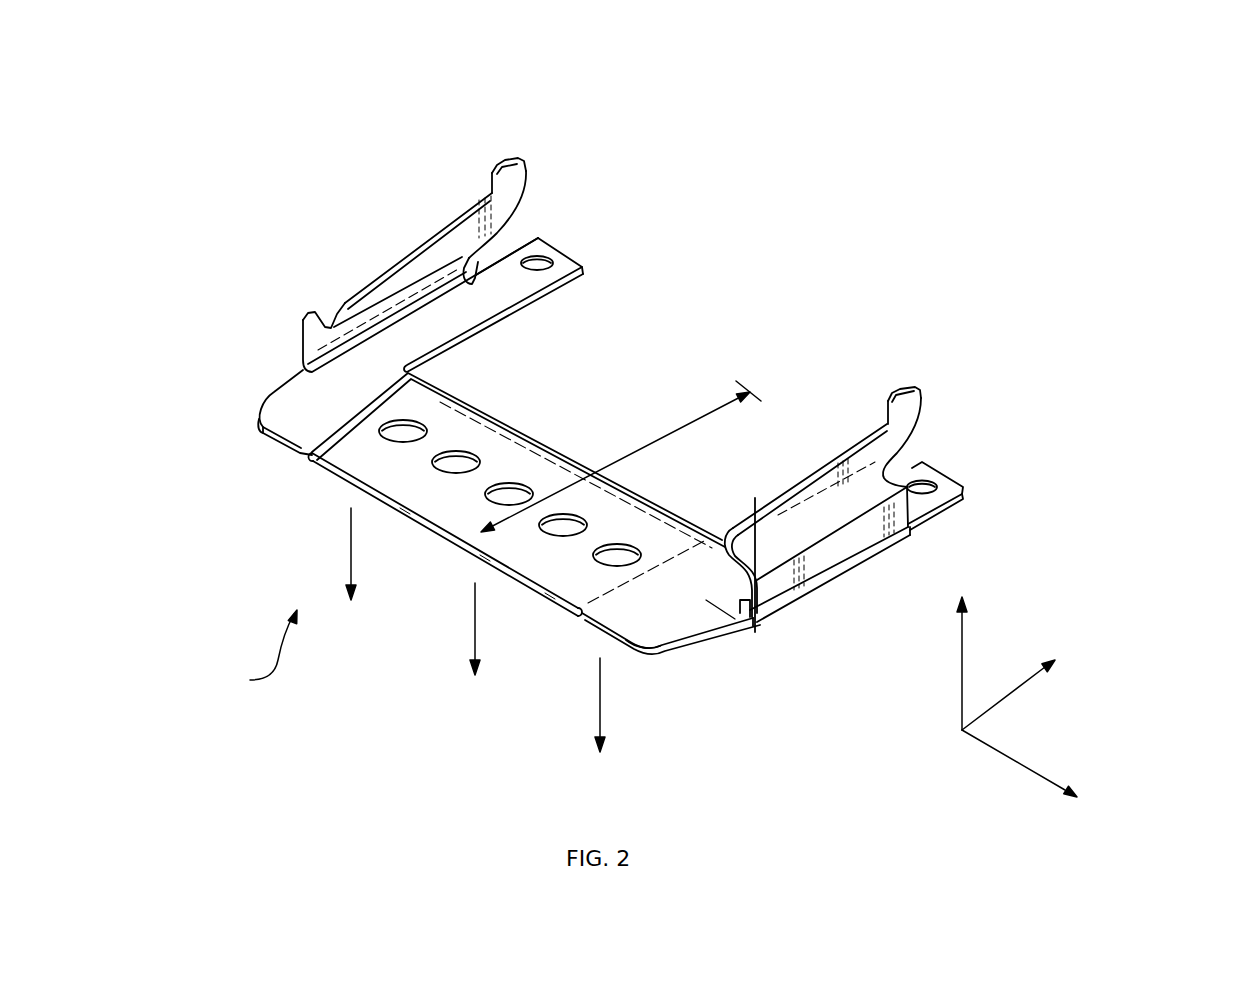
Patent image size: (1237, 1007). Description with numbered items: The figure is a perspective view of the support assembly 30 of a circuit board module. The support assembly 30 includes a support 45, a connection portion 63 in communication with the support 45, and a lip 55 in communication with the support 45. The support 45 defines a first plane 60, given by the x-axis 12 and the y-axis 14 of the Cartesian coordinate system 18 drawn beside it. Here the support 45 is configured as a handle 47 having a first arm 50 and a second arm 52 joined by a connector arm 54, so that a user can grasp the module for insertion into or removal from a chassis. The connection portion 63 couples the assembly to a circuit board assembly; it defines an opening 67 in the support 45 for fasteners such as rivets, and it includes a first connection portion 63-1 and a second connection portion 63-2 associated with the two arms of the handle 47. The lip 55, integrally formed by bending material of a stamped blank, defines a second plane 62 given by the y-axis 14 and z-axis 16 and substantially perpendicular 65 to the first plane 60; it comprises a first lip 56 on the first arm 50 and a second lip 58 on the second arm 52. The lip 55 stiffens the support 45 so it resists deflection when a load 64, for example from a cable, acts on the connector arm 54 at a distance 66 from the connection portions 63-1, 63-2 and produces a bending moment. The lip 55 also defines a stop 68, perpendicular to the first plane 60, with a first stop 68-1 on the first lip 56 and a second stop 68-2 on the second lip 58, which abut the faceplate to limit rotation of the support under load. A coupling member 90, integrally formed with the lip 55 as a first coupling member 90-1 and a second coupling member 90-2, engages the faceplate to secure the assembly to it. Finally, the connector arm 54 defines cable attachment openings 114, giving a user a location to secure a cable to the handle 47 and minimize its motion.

The x-axis 12 is at (1010, 762).
The y-axis 14 is at (1007, 697).
The z-axis 16 is at (963, 652).
The Cartesian coordinate system 18 is at (1120, 597).
The support assembly 30 is at (916, 288).
The support 45 is at (518, 420).
The handle 47 is at (258, 652).
The first arm 50 is at (281, 410).
The second arm 52 is at (678, 631).
The connector arm 54 is at (413, 520).
The lip 55 is at (375, 256).
The first lip 56 is at (301, 332).
The second lip 58 is at (840, 552).
The first plane 60 is at (712, 604).
The second plane 62 is at (756, 571).
The connection portion 63 is at (549, 295).
The first connection portion 63-1 is at (577, 255).
The second connection portion 63-2 is at (963, 480).
The load 64 is at (350, 533).
The substantially perpendicular 65 is at (732, 593).
The distance 66 is at (696, 432).
The opening 67 is at (540, 264).
The stop 68 is at (548, 230).
The first stop 68-1 is at (482, 253).
The second stop 68-2 is at (909, 478).
The coupling member 90 is at (520, 156).
The first coupling member 90-1 is at (522, 172).
The second coupling member 90-2 is at (921, 402).
The cable attachment opening 114 is at (440, 403).